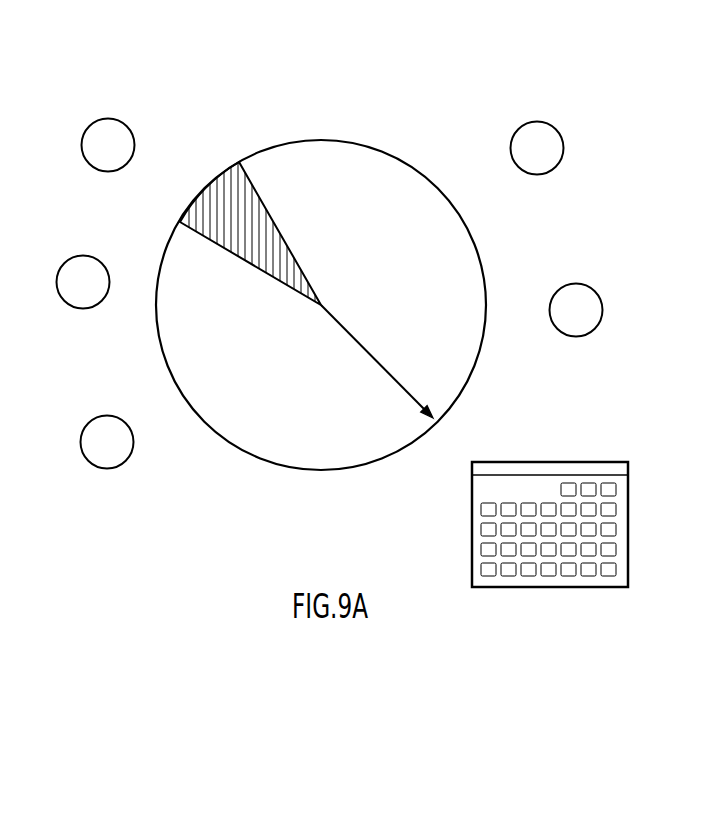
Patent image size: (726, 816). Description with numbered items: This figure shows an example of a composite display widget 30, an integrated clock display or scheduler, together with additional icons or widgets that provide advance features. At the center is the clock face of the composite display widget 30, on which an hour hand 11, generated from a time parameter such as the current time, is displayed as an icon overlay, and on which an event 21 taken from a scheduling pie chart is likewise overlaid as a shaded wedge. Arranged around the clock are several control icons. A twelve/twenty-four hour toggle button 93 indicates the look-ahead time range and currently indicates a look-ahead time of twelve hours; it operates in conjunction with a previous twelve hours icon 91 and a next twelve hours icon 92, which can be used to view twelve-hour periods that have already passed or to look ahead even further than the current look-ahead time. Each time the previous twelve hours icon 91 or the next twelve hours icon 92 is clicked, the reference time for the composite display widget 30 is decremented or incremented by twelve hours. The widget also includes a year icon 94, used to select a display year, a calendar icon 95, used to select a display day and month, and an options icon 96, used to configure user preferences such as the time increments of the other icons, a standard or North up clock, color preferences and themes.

The composite display widget 30 is at (452, 125).
The event 21 is at (282, 231).
The hour hand 11 is at (361, 341).
The previous 12 hours icon 91 is at (110, 118).
The next 12 hours icon 92 is at (535, 122).
The 12/24 hour toggle button 93 is at (83, 255).
The year (YR) icon 94 is at (573, 283).
The calendar icon 95 is at (628, 518).
The options (OPT) icon 96 is at (108, 416).